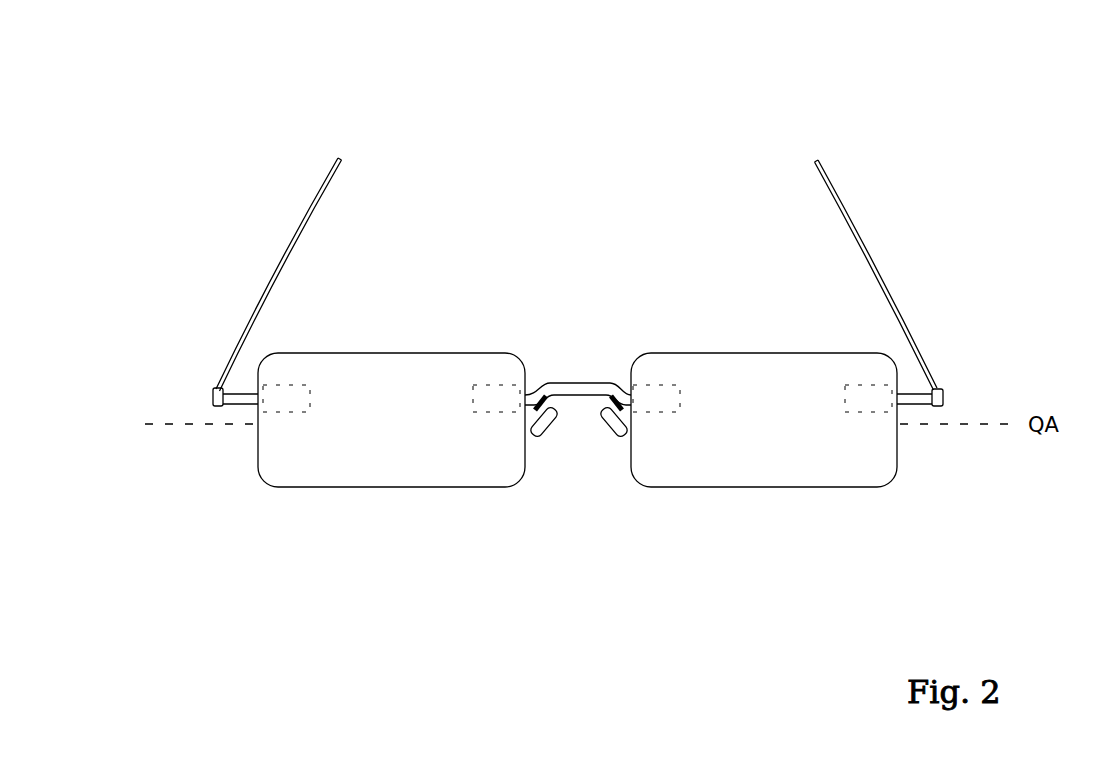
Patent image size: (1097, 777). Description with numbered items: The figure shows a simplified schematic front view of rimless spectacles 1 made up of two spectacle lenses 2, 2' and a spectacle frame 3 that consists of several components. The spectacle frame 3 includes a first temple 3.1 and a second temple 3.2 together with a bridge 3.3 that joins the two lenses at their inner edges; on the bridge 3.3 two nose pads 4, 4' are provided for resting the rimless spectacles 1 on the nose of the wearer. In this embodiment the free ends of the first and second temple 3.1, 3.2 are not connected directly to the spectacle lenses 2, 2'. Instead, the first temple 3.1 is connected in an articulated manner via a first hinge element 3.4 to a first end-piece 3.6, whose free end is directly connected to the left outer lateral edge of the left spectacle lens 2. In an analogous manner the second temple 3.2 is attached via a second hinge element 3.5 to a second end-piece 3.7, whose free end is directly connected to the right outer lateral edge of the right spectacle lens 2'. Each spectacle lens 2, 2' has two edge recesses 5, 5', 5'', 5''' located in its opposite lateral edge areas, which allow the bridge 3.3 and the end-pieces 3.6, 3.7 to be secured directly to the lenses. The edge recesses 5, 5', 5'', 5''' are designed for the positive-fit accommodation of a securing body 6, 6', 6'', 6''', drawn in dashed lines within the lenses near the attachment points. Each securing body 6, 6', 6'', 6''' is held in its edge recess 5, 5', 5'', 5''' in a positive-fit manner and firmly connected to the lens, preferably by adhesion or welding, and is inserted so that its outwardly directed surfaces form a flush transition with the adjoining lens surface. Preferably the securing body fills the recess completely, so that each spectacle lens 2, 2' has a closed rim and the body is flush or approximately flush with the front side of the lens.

The rimless spectacles 1 is at (958, 85).
The spectacle lens 2 is at (391, 454).
The spectacle lens 2' is at (764, 454).
The spectacle frame 3 is at (1030, 222).
The first temple 3.1 is at (283, 248).
The second temple 3.2 is at (870, 238).
The bridge 3.3 is at (578, 380).
The first hinge element 3.4 is at (212, 390).
The second hinge element 3.5 is at (942, 390).
The first end-piece 3.6 is at (234, 406).
The second end-piece 3.7 is at (918, 405).
The nose pad 4 is at (545, 450).
The nose pad 4' is at (608, 450).
The edge recess 5 is at (186, 485).
The edge recess 5' is at (522, 486).
The edge recess 5'' is at (637, 496).
The edge recess 5''' is at (937, 480).
The securing body 6 is at (294, 349).
The securing body 6' is at (493, 349).
The securing body 6'' is at (670, 349).
The securing body 6''' is at (863, 349).